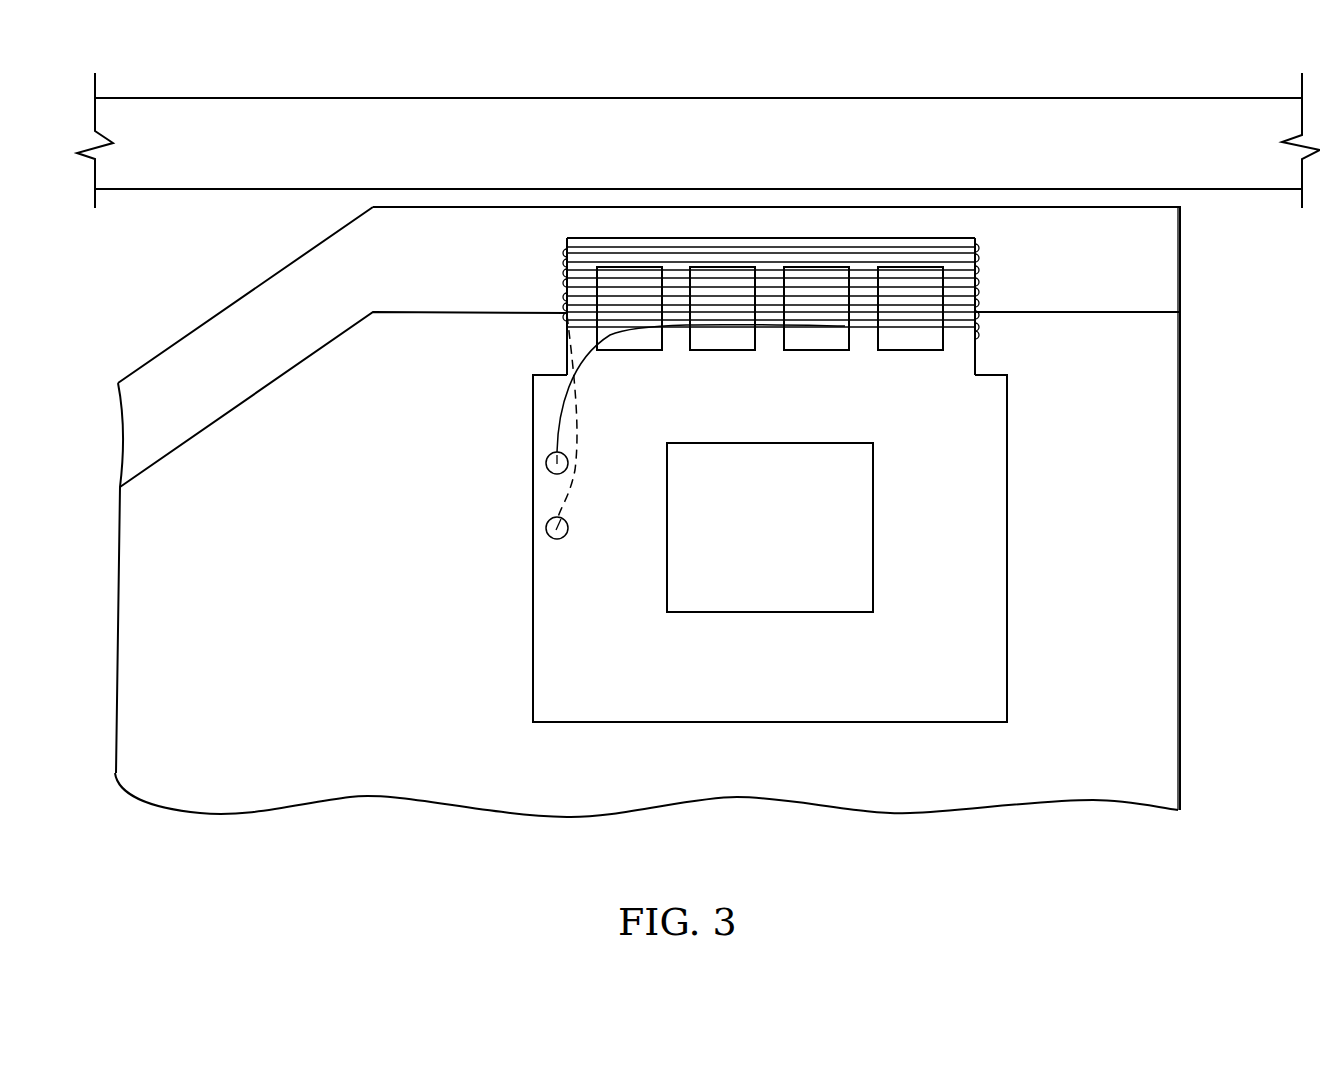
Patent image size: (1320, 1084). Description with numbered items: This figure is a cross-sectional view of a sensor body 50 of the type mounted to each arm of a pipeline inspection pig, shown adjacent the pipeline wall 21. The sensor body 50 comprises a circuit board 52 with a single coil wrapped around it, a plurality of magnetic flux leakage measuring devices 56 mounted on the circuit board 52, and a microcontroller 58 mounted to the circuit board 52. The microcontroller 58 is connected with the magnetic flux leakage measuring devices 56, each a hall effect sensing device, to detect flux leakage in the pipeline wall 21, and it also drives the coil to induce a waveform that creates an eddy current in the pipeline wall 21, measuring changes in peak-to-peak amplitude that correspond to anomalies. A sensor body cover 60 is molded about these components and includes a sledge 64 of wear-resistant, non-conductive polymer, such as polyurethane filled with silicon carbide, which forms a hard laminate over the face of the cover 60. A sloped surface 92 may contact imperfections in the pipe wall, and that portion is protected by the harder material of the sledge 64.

The pipeline wall 21 is at (1275, 191).
The sensor body 50 is at (1118, 843).
The circuit board 52 is at (1007, 560).
The magnetic flux leakage measuring devices 56 is at (722, 338).
The microcontroller 58 is at (873, 507).
The sensor body cover 60 is at (1186, 272).
The sledge 64 is at (1181, 243).
The sloped surface 92 is at (212, 318).